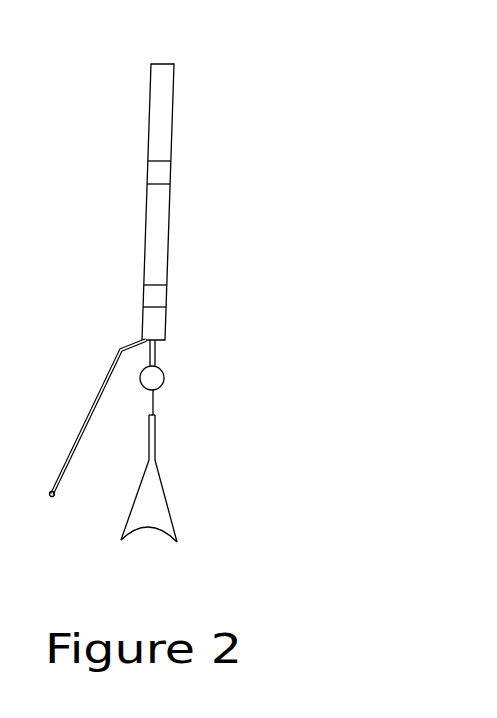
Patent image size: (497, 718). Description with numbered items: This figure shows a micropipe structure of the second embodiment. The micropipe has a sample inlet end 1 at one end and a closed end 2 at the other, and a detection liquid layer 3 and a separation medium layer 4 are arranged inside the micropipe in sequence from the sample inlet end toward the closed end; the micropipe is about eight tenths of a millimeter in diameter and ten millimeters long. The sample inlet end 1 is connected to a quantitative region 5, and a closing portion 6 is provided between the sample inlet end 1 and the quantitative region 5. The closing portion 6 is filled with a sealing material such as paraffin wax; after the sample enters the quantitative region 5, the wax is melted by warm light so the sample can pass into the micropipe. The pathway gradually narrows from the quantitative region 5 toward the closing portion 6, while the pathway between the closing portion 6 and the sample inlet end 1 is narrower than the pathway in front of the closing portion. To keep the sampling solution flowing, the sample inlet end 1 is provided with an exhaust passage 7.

The sample inlet end 1 is at (165, 342).
The closed end 2 is at (163, 62).
The detection liquid layer 3 is at (143, 292).
The separation medium layer 4 is at (147, 173).
The quantitative region 5 is at (152, 529).
The closing portion 6 is at (161, 390).
The exhaust passage 7 is at (88, 422).